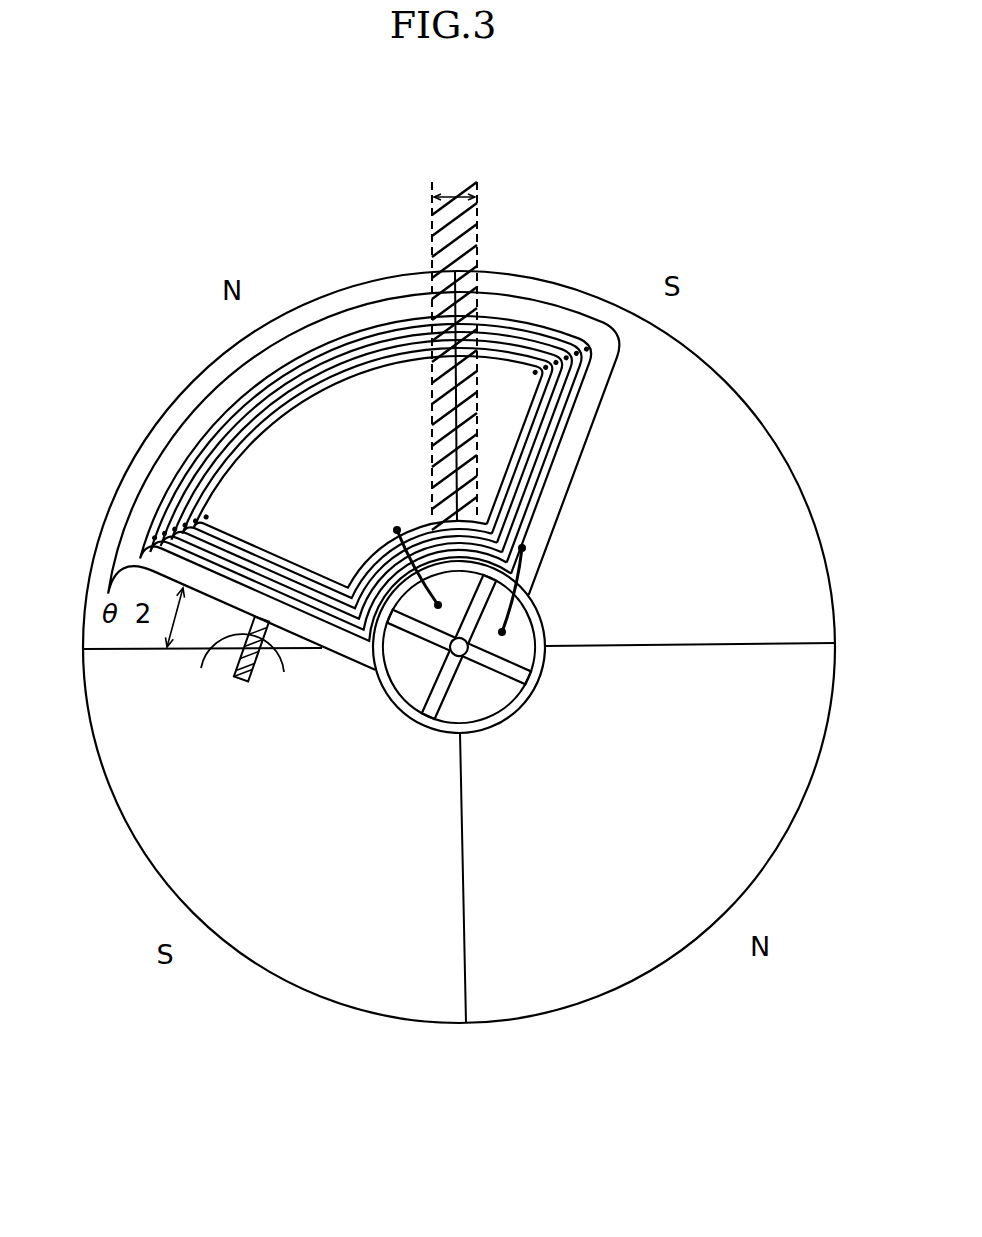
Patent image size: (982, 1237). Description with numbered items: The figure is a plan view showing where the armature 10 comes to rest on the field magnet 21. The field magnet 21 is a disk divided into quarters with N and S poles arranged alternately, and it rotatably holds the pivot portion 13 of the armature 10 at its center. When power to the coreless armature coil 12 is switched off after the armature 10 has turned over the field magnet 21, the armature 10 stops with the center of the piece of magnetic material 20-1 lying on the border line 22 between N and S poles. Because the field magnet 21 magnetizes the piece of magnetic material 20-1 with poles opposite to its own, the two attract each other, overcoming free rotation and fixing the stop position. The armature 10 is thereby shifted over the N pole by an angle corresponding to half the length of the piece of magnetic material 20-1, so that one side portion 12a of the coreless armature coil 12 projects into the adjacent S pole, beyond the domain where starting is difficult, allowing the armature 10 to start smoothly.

The armature 10 is at (365, 447).
The coreless armature coil 12 is at (233, 403).
The one side portion of the coreless armature coil 12a is at (568, 447).
The pivot portion 13 is at (528, 702).
The field magnet 21 is at (459, 647).
The border line 22 is at (127, 652).
The piece of magnetic material 20-1 is at (247, 715).